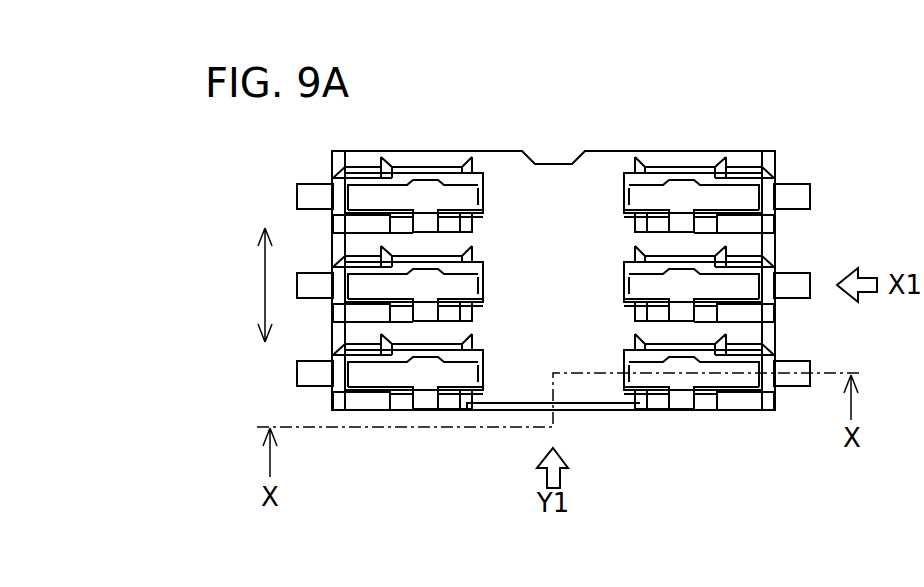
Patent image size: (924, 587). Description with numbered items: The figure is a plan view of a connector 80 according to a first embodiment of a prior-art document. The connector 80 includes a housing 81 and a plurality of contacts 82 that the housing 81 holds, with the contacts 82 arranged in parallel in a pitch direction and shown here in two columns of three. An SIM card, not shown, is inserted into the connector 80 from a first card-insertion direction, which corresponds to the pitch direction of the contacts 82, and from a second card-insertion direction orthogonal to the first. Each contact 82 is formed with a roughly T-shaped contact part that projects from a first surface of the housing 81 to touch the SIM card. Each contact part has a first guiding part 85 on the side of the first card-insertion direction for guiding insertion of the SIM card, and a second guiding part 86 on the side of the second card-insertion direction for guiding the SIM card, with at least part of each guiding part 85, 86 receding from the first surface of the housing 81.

The connector 80 is at (575, 133).
The housing 81 is at (680, 149).
The contacts 82 is at (308, 184).
The first guiding part 85 is at (682, 400).
The second guiding part 86 is at (747, 368).